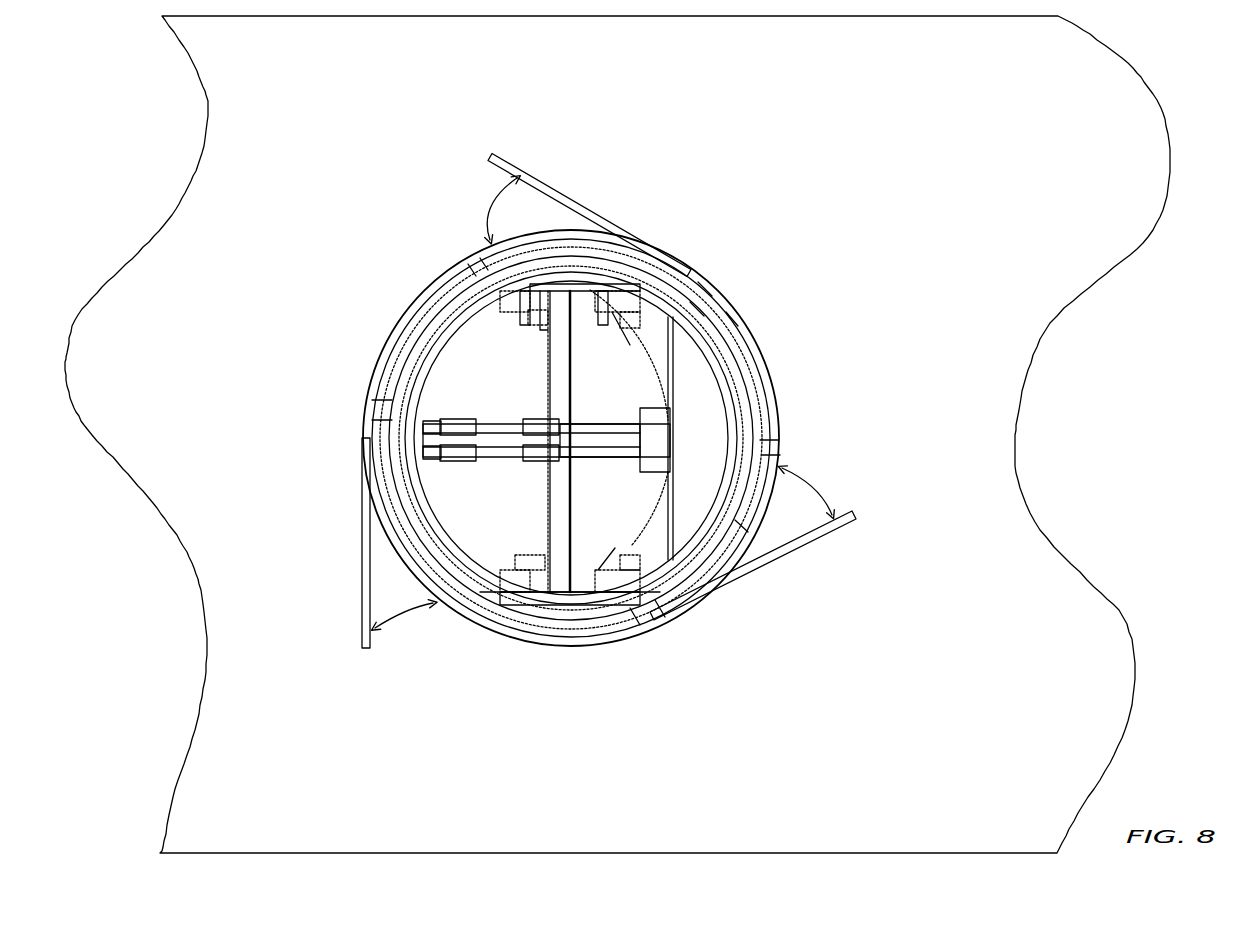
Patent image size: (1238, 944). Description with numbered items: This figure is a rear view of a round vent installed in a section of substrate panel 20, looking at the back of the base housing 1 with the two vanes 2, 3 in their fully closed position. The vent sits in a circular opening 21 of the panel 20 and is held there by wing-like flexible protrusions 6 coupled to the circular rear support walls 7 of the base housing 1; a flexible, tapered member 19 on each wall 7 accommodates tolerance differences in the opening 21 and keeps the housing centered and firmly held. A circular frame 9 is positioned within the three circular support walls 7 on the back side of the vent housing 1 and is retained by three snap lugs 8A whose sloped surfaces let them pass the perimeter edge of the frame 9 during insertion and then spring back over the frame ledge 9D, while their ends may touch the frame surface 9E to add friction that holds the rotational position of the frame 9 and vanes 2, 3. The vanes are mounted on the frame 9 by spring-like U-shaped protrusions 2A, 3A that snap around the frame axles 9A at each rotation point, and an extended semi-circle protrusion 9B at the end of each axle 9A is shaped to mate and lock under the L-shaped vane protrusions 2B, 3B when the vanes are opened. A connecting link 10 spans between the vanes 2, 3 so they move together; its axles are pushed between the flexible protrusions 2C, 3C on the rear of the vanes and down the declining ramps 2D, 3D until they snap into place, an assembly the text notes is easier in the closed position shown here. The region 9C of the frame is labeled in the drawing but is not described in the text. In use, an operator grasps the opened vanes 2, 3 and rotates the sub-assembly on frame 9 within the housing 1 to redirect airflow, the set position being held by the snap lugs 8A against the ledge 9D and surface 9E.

The substrate panel/wall 20 is at (311, 94).
The base housing 1 is at (540, 240).
The vane 2 is at (453, 372).
The protrusion 2A is at (508, 306).
The vane protrusion 2B is at (538, 326).
The protrusion 2C is at (434, 420).
The declining ramp 2D is at (464, 420).
The vane 3 is at (579, 396).
The protrusion 3A is at (610, 296).
The vane protrusion 3B is at (630, 322).
The protrusion 3C is at (606, 424).
The declining ramp 3D is at (538, 420).
The protrusion 6 is at (536, 178).
The base housing rear support wall 7 is at (384, 346).
The snap lug 8A is at (706, 302).
The circular frame 9 is at (434, 546).
The axle 9A is at (522, 314).
The protrusion 9B is at (532, 328).
The ring plate 9C is at (730, 440).
The frame ledge 9D is at (780, 450).
The frame surface 9E is at (755, 514).
The connecting link 10 is at (496, 438).
The member 19 is at (424, 296).
The opening 21 is at (484, 250).